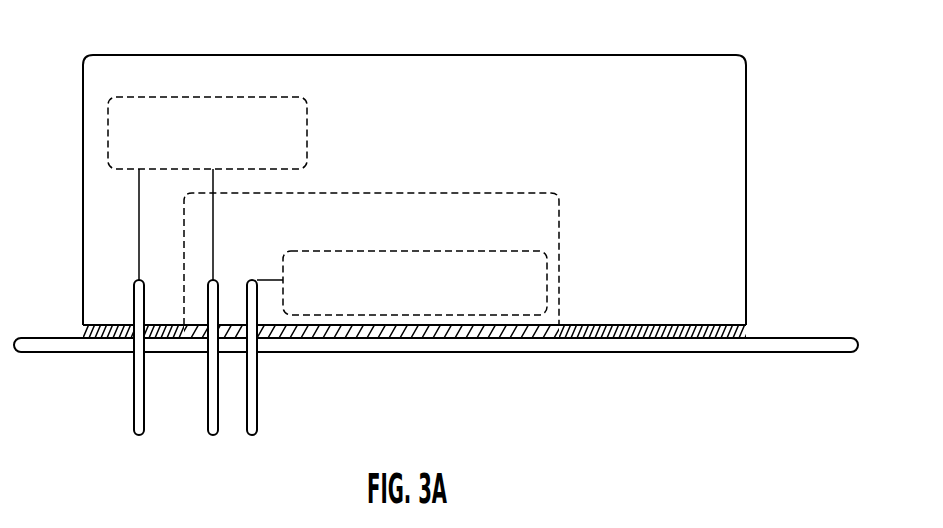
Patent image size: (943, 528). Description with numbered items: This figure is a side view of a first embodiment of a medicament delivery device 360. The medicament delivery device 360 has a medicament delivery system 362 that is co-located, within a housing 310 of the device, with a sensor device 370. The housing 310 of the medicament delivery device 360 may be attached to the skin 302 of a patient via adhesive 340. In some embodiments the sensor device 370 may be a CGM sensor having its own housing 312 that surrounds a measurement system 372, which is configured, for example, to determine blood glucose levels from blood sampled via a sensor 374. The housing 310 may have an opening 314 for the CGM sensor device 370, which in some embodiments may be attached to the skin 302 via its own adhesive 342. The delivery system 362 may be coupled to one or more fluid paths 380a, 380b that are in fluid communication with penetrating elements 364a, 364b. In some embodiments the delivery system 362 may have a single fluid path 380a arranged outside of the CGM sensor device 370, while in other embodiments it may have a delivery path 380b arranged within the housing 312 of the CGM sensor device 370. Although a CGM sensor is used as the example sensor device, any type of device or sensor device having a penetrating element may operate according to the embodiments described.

The skin 302 is at (773, 337).
The housing 310 is at (746, 135).
The housing 312 is at (561, 232).
The opening 314 is at (402, 365).
The adhesive 340 is at (91, 338).
The adhesive 342 is at (522, 338).
The medicament delivery device 360 is at (449, 190).
The medicament delivery system 362 is at (225, 158).
The penetrating element 364a is at (134, 428).
The penetrating element 364b is at (208, 396).
The sensor device 370 is at (406, 259).
The measurement system 372 is at (431, 310).
The sensor 374 is at (257, 415).
The fluid path 380a is at (138, 245).
The fluid path 380b is at (214, 247).